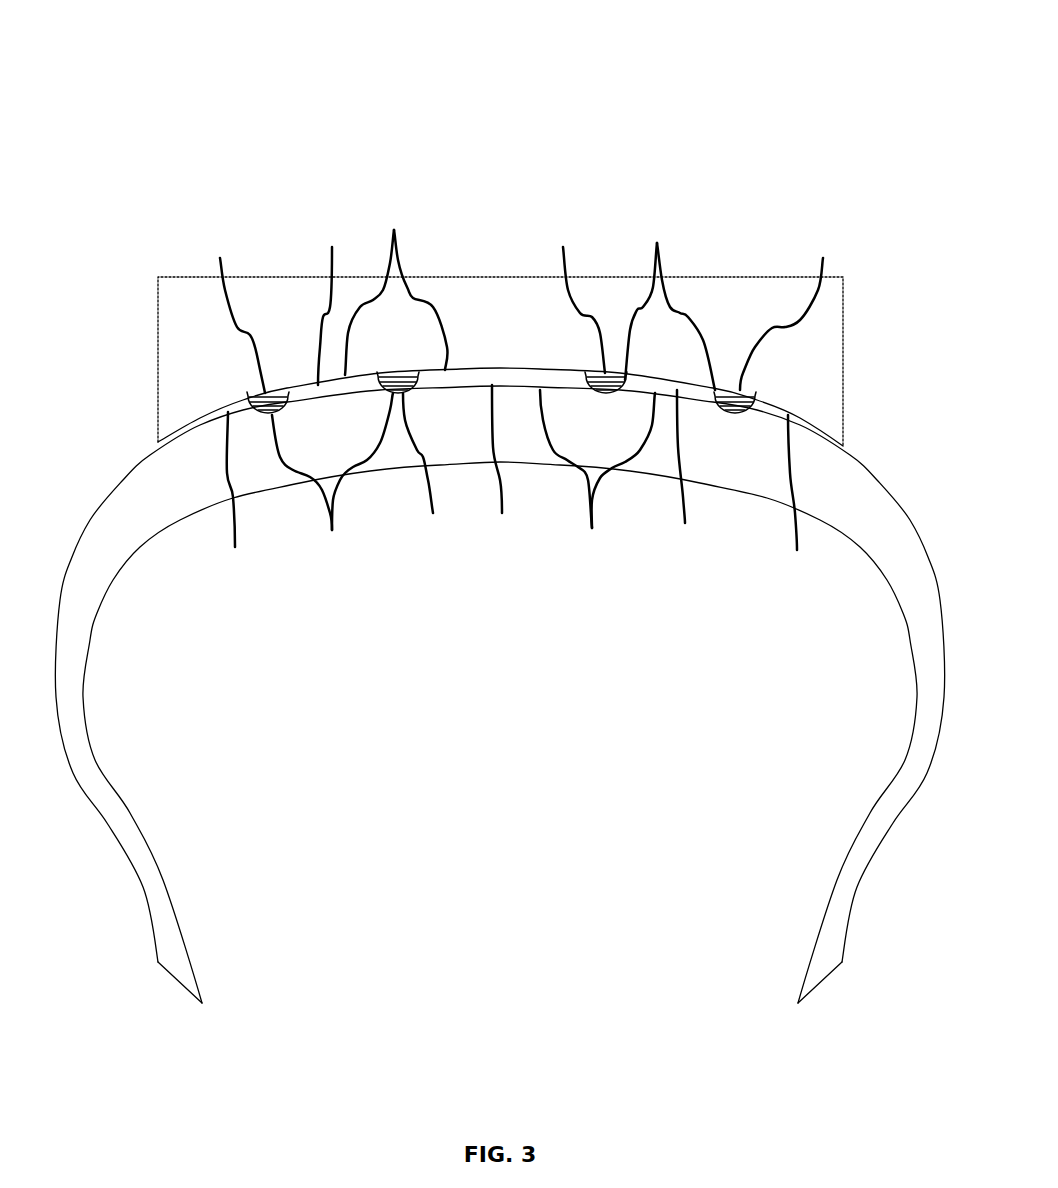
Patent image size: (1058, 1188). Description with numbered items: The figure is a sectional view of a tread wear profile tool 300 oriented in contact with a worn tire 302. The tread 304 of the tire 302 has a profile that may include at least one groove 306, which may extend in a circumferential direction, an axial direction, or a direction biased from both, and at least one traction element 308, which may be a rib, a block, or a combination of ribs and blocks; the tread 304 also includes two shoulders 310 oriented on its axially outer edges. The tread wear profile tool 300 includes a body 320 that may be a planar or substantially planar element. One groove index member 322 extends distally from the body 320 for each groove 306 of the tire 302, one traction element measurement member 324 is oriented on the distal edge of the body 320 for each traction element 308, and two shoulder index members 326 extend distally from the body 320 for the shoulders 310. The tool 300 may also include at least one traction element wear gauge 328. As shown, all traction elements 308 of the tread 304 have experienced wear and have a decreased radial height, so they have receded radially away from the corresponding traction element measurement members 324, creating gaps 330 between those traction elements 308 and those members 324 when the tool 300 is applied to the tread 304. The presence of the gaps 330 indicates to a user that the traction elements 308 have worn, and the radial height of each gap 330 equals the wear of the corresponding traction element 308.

The tread wear profile tool 300 is at (208, 147).
The tire 302 is at (500, 694).
The tread 304 is at (305, 372).
The groove 306 is at (332, 477).
The traction element 308 is at (597, 472).
The shoulder 310 is at (162, 457).
The body 320 is at (755, 305).
The groove index member 322 is at (670, 302).
The traction element measurement member 324 is at (396, 288).
The shoulder index member 326 is at (170, 422).
The traction element wear gauge 328 is at (521, 385).
The gap 330 is at (514, 402).